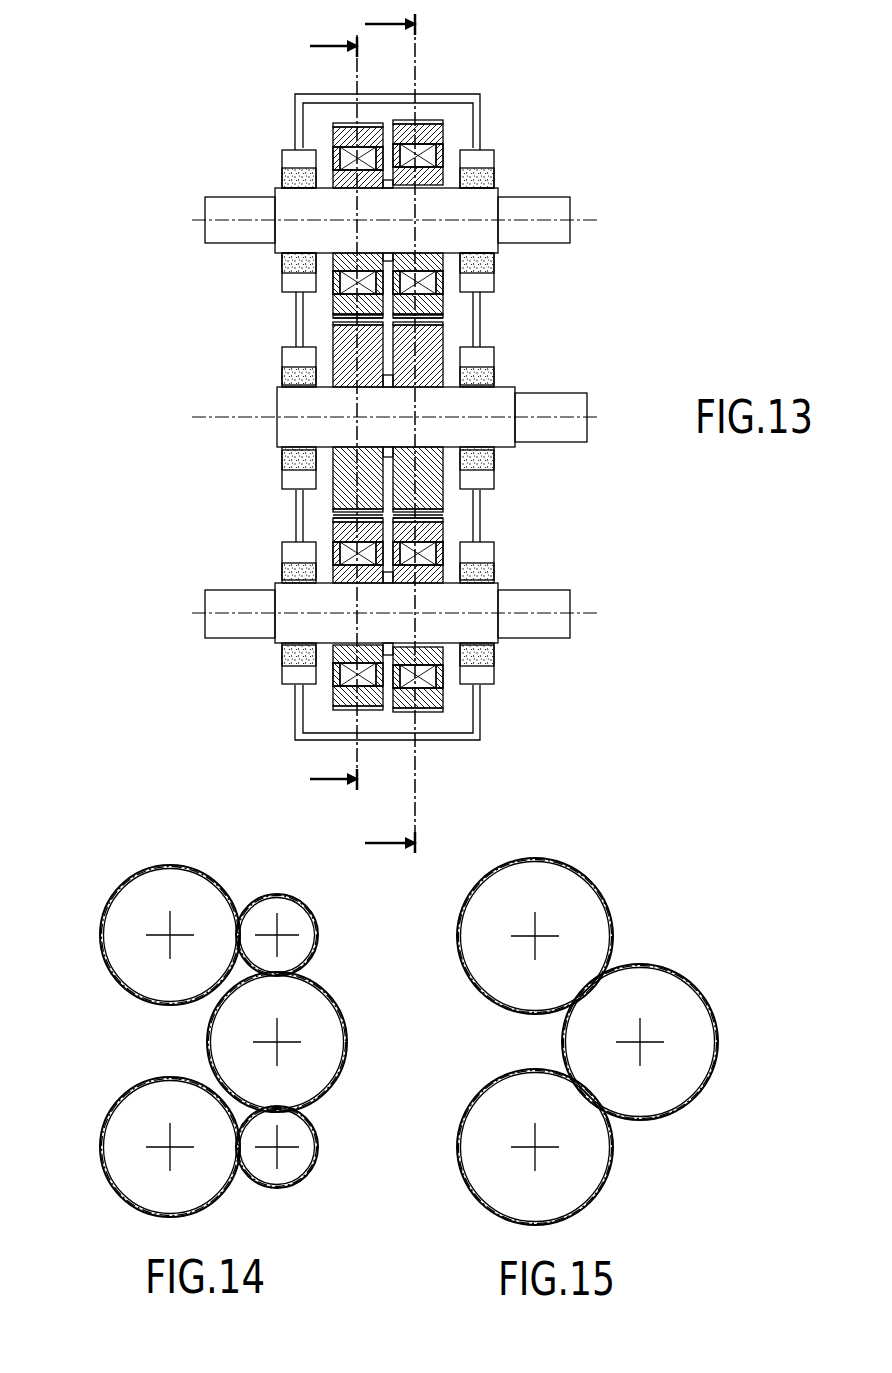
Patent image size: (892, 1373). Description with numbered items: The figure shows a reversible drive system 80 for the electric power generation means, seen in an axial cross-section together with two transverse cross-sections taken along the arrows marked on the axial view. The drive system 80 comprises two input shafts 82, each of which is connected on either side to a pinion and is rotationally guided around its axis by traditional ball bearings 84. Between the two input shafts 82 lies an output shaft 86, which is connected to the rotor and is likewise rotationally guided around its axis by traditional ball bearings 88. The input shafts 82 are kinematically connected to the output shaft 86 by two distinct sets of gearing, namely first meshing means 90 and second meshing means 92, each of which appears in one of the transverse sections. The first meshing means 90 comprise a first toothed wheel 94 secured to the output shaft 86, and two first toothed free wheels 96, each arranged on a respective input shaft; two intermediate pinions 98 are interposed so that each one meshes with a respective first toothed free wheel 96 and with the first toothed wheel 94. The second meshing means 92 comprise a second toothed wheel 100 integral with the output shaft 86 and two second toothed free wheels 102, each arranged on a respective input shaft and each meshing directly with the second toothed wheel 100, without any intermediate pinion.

In FIG. 13, the reversible drive system 80 is at (150, 153).
In FIG. 13, the input shaft 82 is at (560, 237).
In FIG. 13, the ball bearing 84 is at (490, 170).
In FIG. 13, the output shaft 86 is at (560, 435).
In FIG. 13, the ball bearing 88 is at (493, 368).
In FIG. 13, the first meshing means 90 is at (272, 78).
In FIG. 14, the first meshing means 90 is at (152, 845).
In FIG. 13, the second meshing means 92 is at (460, 78).
In FIG. 15, the second meshing means 92 is at (695, 925).
In FIG. 13, the first toothed wheel 94 is at (337, 334).
In FIG. 14, the first toothed wheel 94 is at (315, 1010).
In FIG. 13, the first toothed free wheel 96 is at (337, 133).
In FIG. 14, the first toothed free wheel 96 is at (133, 903).
In FIG. 14, the intermediate pinion 98 is at (303, 920).
In FIG. 15, the second toothed wheel 100 is at (682, 1087).
In FIG. 15, the second toothed free wheel 102 is at (590, 895).